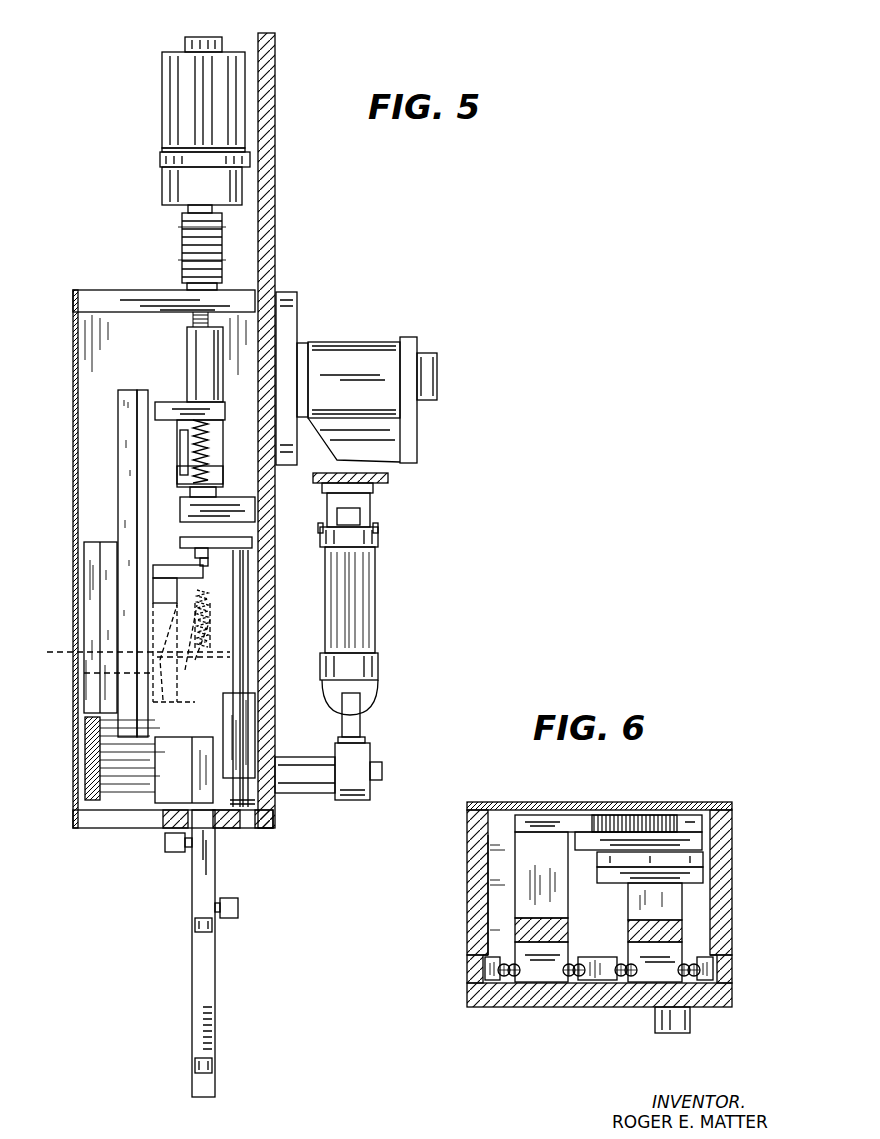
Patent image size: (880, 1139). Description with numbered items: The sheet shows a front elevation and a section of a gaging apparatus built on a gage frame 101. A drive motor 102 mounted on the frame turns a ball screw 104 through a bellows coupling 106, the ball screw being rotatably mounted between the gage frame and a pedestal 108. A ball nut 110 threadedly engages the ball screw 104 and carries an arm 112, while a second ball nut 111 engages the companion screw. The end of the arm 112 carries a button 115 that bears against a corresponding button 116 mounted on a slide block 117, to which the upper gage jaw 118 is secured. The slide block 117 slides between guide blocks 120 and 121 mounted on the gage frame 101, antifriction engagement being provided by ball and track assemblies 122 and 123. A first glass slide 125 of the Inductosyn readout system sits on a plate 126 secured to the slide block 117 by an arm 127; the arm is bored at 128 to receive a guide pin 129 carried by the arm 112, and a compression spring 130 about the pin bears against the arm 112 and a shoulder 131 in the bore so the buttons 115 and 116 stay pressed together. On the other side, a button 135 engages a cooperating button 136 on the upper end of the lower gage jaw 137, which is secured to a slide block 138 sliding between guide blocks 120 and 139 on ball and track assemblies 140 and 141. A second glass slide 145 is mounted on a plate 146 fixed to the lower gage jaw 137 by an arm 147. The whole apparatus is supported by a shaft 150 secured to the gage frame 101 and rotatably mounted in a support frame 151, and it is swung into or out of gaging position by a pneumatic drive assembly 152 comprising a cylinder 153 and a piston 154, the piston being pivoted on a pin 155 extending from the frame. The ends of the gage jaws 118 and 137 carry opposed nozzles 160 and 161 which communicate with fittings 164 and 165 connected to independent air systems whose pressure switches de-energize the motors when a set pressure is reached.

In FIG. 6, the gage frame 101 is at (733, 827).
In FIG. 5, the drive motor 102 is at (162, 98).
In FIG. 5, the ball screw 104 is at (193, 322).
In FIG. 5, the bellows coupling 106 is at (182, 243).
In FIG. 5, the pedestal 108 is at (238, 502).
In FIG. 5, the ball nut 110 is at (187, 358).
In FIG. 5, the ball nut 111 is at (218, 444).
In FIG. 5, the arm 112 is at (168, 400).
In FIG. 5, the button 115 is at (210, 560).
In FIG. 5, the button 116 is at (252, 545).
In FIG. 5, the slide block 117 is at (250, 633).
In FIG. 6, the slide block 117 is at (682, 950).
In FIG. 5, the upper gage jaw 118 is at (192, 882).
In FIG. 6, the upper gage jaw 118 is at (683, 930).
In FIG. 6, the guide block 120 is at (593, 980).
In FIG. 5, the guide block 121 is at (245, 720).
In FIG. 6, the guide block 121 is at (707, 982).
In FIG. 6, the ball and track assembly 122 is at (627, 982).
In FIG. 5, the ball and track assembly 123 is at (247, 800).
In FIG. 6, the ball and track assembly 123 is at (688, 982).
In FIG. 5, the first glass slide 125 is at (127, 404).
In FIG. 6, the first glass slide 125 is at (703, 855).
In FIG. 5, the plate 126 is at (140, 425).
In FIG. 6, the plate 126 is at (703, 875).
In FIG. 5, the arm 127 is at (180, 738).
In FIG. 6, the arm 127 is at (682, 898).
In FIG. 5, the bore 128 is at (207, 655).
In FIG. 5, the guide pin 129 is at (210, 612).
In FIG. 5, the compression spring 130 is at (208, 592).
In FIG. 5, the shoulder 131 is at (181, 652).
In FIG. 5, the button 135 is at (125, 656).
In FIG. 5, the button 136 is at (217, 720).
In FIG. 6, the lower gage jaw 137 is at (570, 927).
In FIG. 6, the slide block 138 is at (570, 952).
In FIG. 6, the guide block 139 is at (498, 963).
In FIG. 6, the ball and track assembly 140 is at (510, 982).
In FIG. 6, the ball and track assembly 141 is at (574, 982).
In FIG. 5, the second glass slide 145 is at (103, 685).
In FIG. 6, the second glass slide 145 is at (583, 848).
In FIG. 5, the plate 146 is at (92, 632).
In FIG. 6, the plate 146 is at (513, 822).
In FIG. 5, the arm 147 is at (150, 783).
In FIG. 6, the arm 147 is at (513, 870).
In FIG. 5, the shaft 150 is at (336, 345).
In FIG. 5, the support frame 151 is at (417, 450).
In FIG. 5, the pneumatic drive assembly 152 is at (378, 625).
In FIG. 5, the cylinder 153 is at (377, 583).
In FIG. 5, the piston 154 is at (360, 720).
In FIG. 5, the pin 155 is at (307, 757).
In FIG. 6, the pin 155 is at (667, 1030).
In FIG. 5, the nozzle 160 is at (195, 928).
In FIG. 5, the nozzle 161 is at (195, 1065).
In FIG. 5, the fitting 164 is at (168, 852).
In FIG. 5, the fitting 165 is at (235, 918).